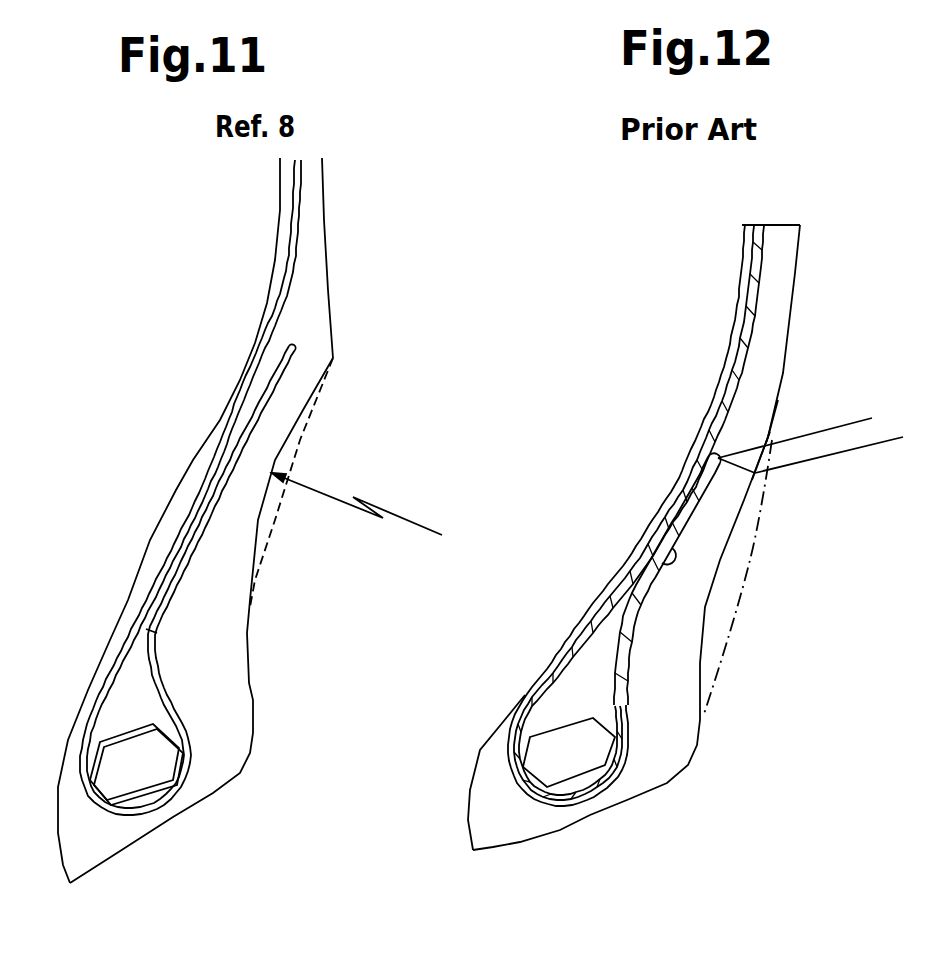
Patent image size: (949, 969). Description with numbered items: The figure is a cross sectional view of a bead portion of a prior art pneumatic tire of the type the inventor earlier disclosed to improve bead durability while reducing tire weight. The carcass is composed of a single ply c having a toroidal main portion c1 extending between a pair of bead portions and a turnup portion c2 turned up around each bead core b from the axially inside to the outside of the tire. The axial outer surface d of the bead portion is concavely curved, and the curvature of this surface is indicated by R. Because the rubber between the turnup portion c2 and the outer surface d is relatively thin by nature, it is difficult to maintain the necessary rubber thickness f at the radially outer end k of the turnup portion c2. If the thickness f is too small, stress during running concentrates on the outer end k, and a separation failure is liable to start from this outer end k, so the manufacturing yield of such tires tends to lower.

The carcass ply c is at (763, 250).
The toroidal main portion c1 is at (754, 287).
The turnup portion c2 is at (642, 572).
The bead core b is at (552, 740).
The axial outer surface d is at (710, 582).
The radially outer end k is at (768, 440).
The radius of curvature R is at (770, 437).
The rubber thickness f is at (833, 400).